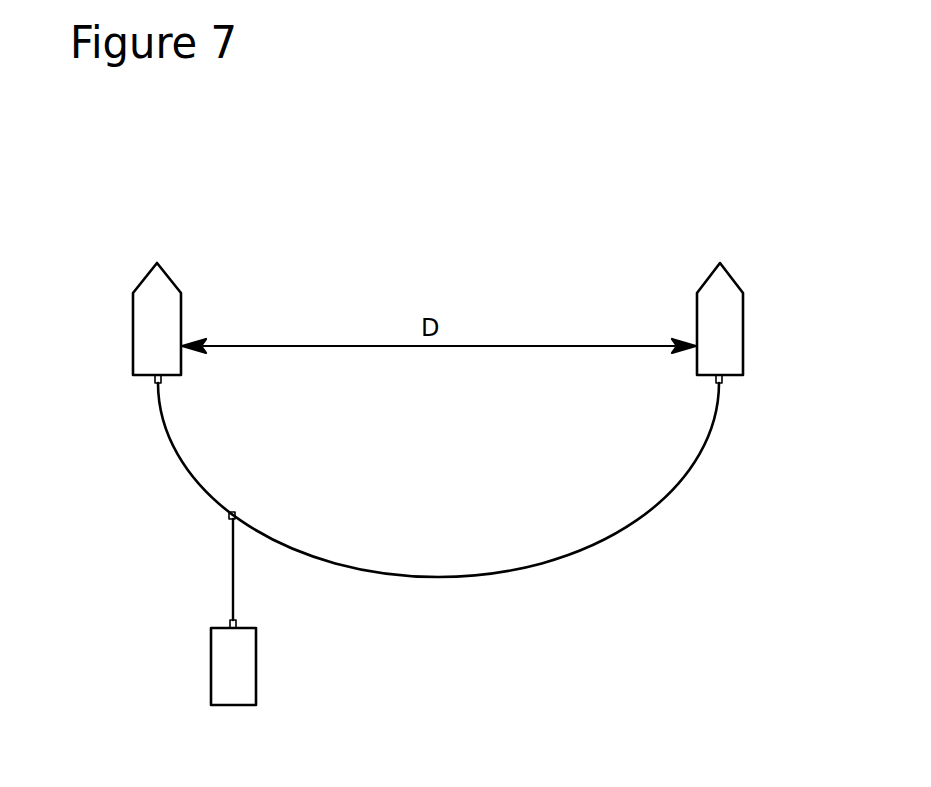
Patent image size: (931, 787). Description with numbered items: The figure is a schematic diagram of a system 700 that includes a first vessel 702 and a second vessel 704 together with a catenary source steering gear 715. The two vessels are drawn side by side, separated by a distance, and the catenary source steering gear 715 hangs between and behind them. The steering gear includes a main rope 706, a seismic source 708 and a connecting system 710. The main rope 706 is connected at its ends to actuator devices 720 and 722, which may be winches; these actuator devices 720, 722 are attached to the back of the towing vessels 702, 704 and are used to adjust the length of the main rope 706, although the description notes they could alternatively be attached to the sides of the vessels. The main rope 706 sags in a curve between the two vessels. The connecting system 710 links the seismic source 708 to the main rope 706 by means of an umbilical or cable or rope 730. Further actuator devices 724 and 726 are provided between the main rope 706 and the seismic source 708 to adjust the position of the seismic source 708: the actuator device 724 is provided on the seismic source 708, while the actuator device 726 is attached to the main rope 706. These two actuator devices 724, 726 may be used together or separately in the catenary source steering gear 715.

The system 700 is at (490, 160).
The first vessel 702 is at (170, 311).
The second vessel 704 is at (733, 313).
The main rope 706 is at (428, 577).
The seismic source 708 is at (248, 675).
The connecting system 710 is at (305, 606).
The catenary source steering gear 715 is at (67, 495).
The actuator device 720 is at (161, 382).
The actuator device 722 is at (722, 383).
The actuator device 724 is at (231, 620).
The actuator device 726 is at (229, 514).
The umbilical or cable or rope 730 is at (233, 553).